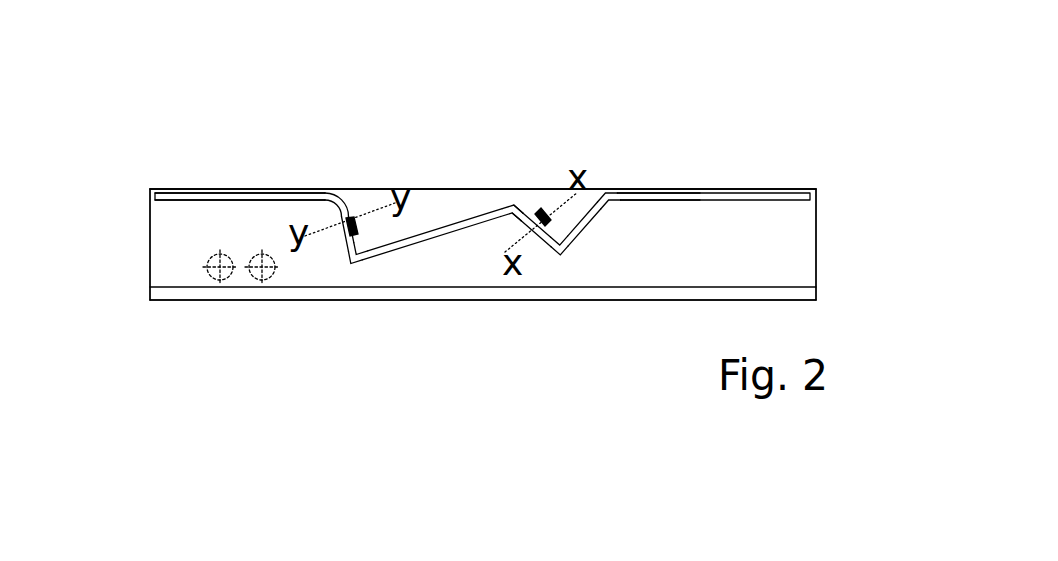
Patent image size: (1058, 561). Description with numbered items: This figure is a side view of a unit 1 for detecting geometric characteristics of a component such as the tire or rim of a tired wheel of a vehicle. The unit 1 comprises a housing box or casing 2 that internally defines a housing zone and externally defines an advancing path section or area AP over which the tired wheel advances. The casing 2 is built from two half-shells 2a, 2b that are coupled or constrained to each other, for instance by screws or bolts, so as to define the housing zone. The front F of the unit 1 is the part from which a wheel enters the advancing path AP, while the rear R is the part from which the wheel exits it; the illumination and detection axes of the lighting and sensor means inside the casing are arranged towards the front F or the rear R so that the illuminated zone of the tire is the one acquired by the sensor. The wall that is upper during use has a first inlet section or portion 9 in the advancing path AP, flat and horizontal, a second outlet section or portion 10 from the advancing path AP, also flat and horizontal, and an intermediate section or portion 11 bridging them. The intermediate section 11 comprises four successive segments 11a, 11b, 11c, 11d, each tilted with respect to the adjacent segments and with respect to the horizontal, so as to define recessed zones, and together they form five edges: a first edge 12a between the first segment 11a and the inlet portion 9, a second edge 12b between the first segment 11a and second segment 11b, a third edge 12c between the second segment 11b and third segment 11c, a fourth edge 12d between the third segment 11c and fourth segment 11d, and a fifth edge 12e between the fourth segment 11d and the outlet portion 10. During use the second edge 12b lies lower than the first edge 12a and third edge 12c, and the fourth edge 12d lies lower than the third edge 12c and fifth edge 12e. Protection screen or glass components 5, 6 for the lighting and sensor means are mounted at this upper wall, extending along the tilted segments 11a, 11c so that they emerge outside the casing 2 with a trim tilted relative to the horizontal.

The unit 1 is at (683, 153).
The housing box or casing 2 is at (194, 272).
The half-shell 2a is at (276, 188).
The half-shell 2b is at (737, 297).
The protection screen or glass component 5 is at (522, 208).
The protection screen or glass component 6 is at (347, 222).
The first inlet section or portion 9 is at (728, 189).
The second outlet section or portion 10 is at (213, 188).
The intermediate section or portion 11 is at (487, 214).
The first segment 11a is at (588, 220).
The second segment 11b is at (538, 234).
The third segment 11c is at (420, 243).
The fourth segment 11d is at (337, 230).
The first edge 12a is at (605, 195).
The second edge 12b is at (561, 254).
The third edge 12c is at (510, 216).
The fourth edge 12d is at (353, 261).
The fifth edge 12e is at (333, 197).
The advancing path section or area AP is at (638, 189).
The rear R is at (150, 222).
The front F is at (816, 230).